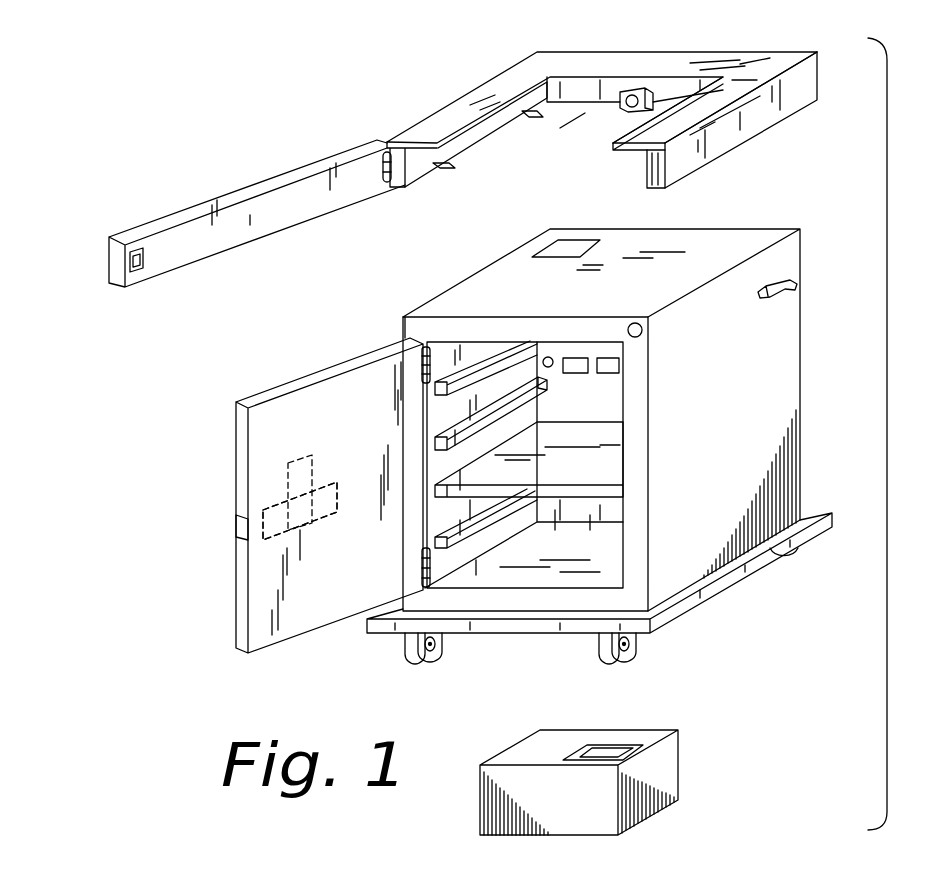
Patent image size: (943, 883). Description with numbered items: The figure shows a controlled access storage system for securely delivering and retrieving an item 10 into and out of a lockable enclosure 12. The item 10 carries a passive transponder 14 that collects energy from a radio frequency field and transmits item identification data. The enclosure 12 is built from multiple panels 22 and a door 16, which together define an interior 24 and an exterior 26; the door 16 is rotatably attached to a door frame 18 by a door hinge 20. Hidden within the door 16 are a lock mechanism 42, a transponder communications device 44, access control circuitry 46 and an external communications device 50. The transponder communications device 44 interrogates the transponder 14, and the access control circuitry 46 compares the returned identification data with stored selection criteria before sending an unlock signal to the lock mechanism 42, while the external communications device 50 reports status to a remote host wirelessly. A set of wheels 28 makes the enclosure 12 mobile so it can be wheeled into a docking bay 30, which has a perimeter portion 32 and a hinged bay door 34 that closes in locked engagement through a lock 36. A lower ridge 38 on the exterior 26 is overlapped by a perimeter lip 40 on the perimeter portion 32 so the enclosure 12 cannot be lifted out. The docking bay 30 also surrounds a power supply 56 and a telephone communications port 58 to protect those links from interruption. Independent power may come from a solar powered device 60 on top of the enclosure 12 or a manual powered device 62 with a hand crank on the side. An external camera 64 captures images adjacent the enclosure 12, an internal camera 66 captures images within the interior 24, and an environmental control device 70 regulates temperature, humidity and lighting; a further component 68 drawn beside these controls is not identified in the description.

The item 10 is at (601, 763).
The enclosure 12 is at (633, 438).
The transponder 14 is at (615, 752).
The door 16 is at (308, 485).
The door frame 18 is at (642, 452).
The door hinge 20 is at (420, 350).
The panels 22 is at (715, 248).
The interior 24 is at (577, 562).
The exterior 26 is at (780, 382).
The wheels 28 is at (427, 652).
The docking bay 30 is at (602, 106).
The perimeter portion 32 is at (752, 118).
The bay door 34 is at (257, 222).
The lock 36 is at (143, 262).
The lower ridge 38 is at (599, 597).
The perimeter lip 40 is at (622, 152).
The lock mechanism 42 is at (267, 505).
The transponder communications device 44 is at (353, 478).
The access control circuitry 46 is at (302, 518).
The external communications device 50 is at (295, 458).
The power supply 56 is at (638, 90).
The telephone communications port 58 is at (625, 108).
The solar powered device 60 is at (558, 250).
The manual powered device 62 is at (797, 293).
The external camera 64 is at (643, 332).
The internal camera 66 is at (548, 356).
The switch 68 is at (573, 374).
The environmental control device 70 is at (608, 357).